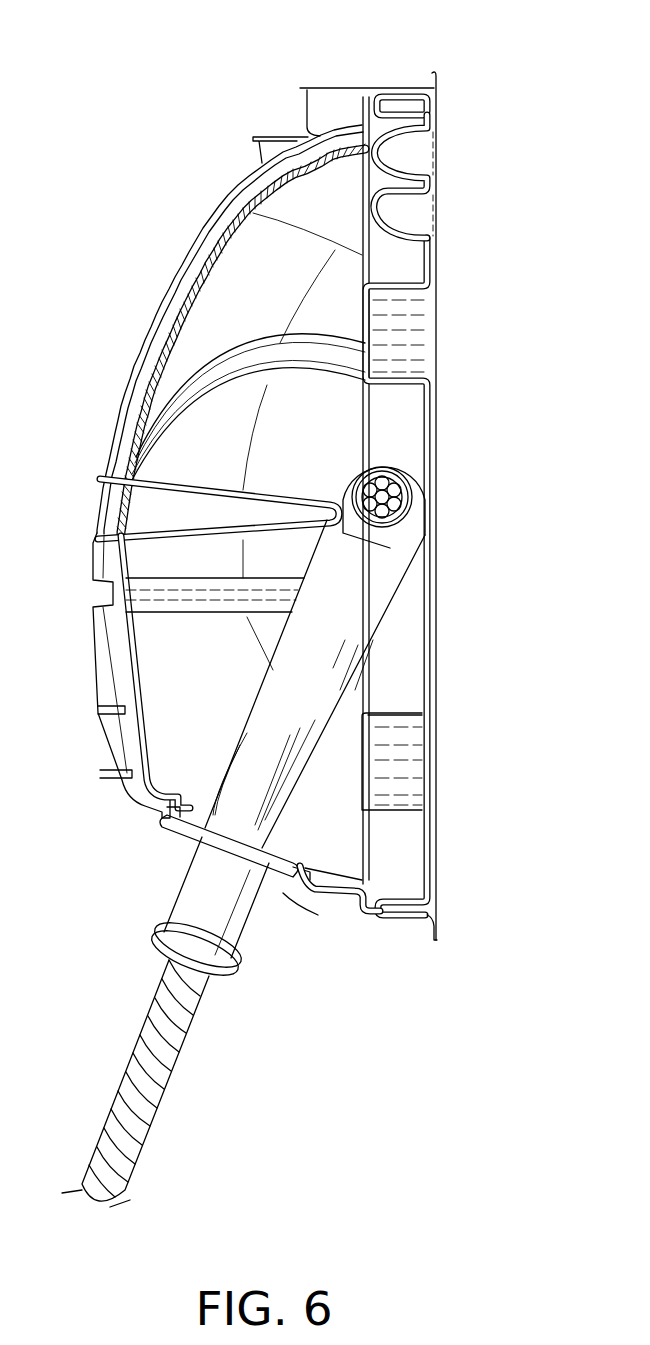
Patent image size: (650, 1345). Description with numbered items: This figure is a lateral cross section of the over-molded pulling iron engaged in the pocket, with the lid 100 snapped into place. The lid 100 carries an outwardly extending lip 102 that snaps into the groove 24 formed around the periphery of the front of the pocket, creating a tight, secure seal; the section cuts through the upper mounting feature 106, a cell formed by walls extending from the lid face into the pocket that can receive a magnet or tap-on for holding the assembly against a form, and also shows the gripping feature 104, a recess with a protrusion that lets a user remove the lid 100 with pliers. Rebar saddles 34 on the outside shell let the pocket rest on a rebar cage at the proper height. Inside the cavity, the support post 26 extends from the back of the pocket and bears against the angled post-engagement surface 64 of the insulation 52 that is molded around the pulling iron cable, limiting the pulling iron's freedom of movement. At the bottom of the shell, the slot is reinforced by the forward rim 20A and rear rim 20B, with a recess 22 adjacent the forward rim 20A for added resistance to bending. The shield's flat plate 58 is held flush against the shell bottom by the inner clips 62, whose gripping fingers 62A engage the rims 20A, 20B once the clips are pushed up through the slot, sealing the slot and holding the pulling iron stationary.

The forward rim 20A is at (293, 888).
The rear rim 20B is at (175, 824).
The recess 22 is at (333, 914).
The groove 24 is at (372, 96).
The support post 26 is at (222, 484).
The rebar saddles 34 is at (300, 112).
The insulation 52 is at (315, 706).
The plate 58 is at (268, 880).
The inner clips 62 is at (233, 833).
The gripping fingers 62A is at (200, 800).
The post-engagement surface 64 is at (378, 551).
The lid 100 is at (437, 440).
The lip 102 is at (437, 110).
The gripping feature 104 is at (437, 179).
The mounting features 106 is at (366, 352).